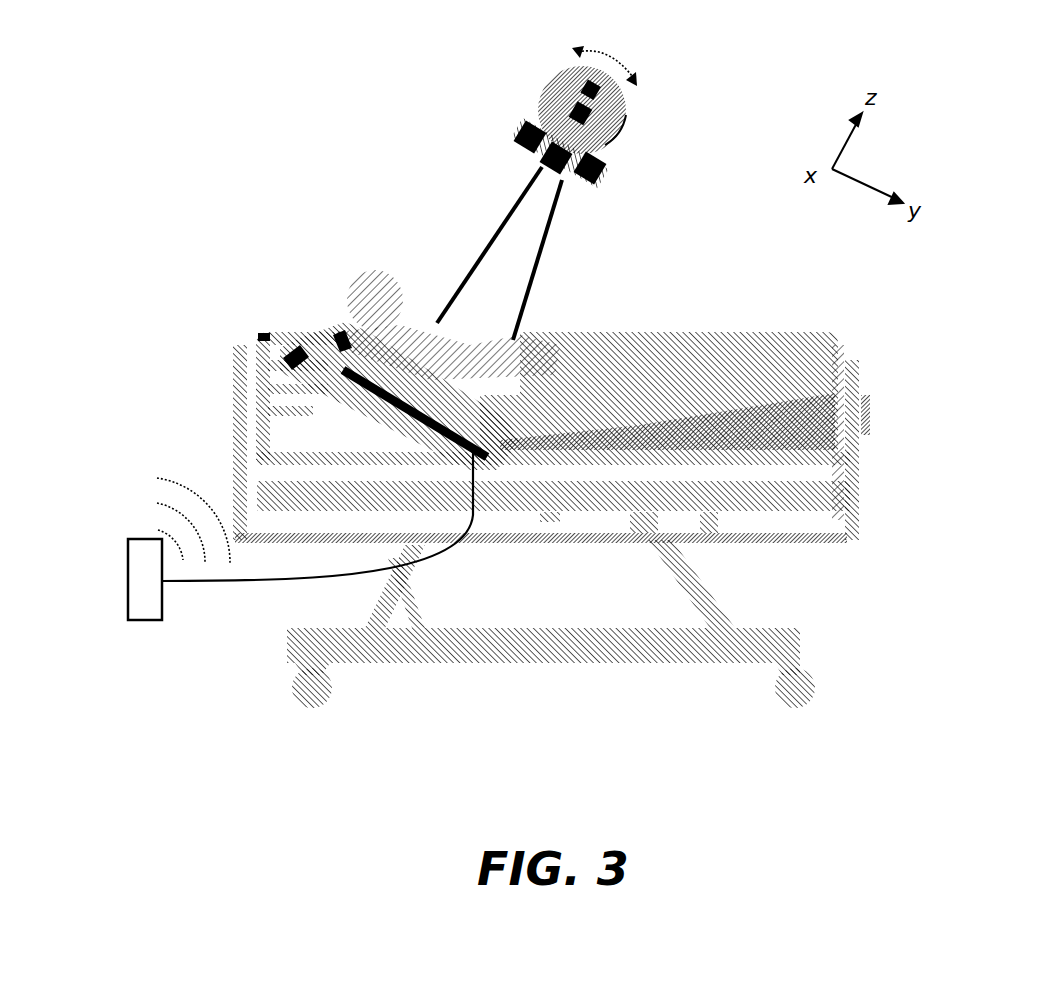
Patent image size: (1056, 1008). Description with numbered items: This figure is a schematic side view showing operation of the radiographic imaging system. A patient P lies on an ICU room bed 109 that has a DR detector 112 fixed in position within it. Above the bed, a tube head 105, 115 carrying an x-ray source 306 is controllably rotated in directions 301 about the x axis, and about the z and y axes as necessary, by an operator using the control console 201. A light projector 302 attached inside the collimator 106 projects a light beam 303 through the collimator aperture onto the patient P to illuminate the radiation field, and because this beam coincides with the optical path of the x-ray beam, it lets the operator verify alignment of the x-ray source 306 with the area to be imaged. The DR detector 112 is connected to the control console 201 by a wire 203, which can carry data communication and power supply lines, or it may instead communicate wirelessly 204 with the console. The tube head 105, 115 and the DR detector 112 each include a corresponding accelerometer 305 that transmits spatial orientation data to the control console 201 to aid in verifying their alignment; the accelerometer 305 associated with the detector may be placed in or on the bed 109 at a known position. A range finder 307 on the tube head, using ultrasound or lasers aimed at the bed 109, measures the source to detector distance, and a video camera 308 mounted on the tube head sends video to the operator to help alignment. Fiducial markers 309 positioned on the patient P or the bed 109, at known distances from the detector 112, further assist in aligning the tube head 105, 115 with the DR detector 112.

The tube head 105 is at (517, 90).
The tube head 115 is at (517, 90).
The directions 301 is at (633, 80).
The accelerometer 305 is at (630, 108).
The x-ray source 306 is at (628, 127).
The range finder 307 is at (600, 180).
The light projector 302 is at (562, 183).
The video camera 308 is at (520, 133).
The collimator 106 is at (537, 160).
The light beam 303 is at (468, 276).
The fiducial markers 309 is at (297, 352).
The DR detector 112 is at (363, 397).
The patient P is at (335, 333).
The wireless communication 204 is at (136, 493).
The wire 203 is at (178, 587).
The control console 201 is at (127, 605).
The ICU room bed 109 is at (915, 527).